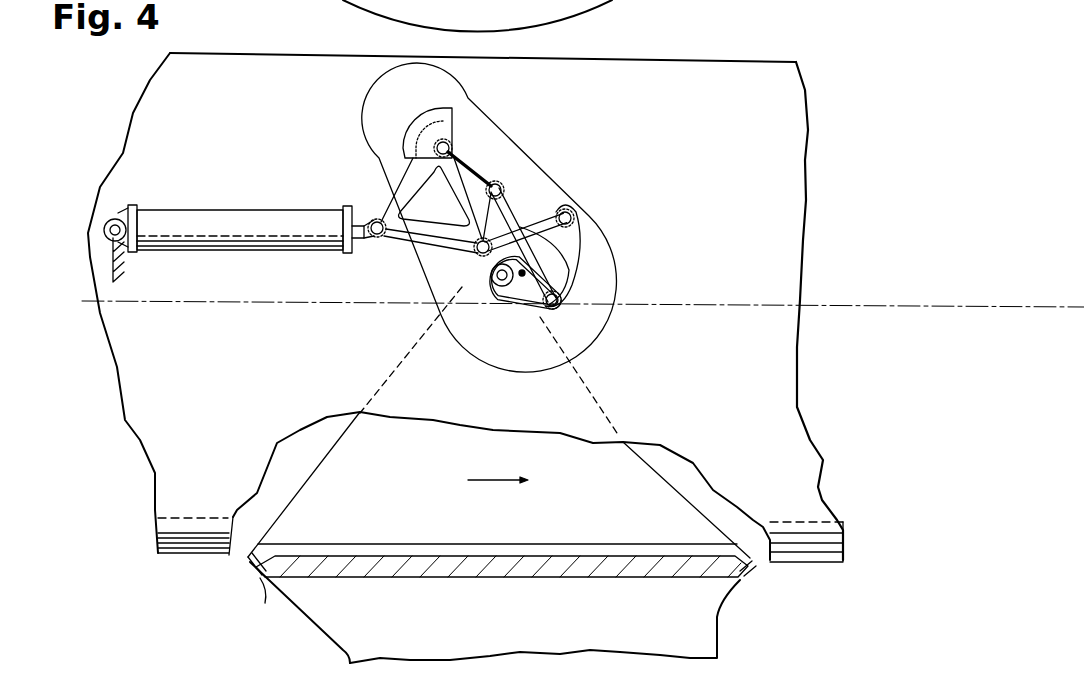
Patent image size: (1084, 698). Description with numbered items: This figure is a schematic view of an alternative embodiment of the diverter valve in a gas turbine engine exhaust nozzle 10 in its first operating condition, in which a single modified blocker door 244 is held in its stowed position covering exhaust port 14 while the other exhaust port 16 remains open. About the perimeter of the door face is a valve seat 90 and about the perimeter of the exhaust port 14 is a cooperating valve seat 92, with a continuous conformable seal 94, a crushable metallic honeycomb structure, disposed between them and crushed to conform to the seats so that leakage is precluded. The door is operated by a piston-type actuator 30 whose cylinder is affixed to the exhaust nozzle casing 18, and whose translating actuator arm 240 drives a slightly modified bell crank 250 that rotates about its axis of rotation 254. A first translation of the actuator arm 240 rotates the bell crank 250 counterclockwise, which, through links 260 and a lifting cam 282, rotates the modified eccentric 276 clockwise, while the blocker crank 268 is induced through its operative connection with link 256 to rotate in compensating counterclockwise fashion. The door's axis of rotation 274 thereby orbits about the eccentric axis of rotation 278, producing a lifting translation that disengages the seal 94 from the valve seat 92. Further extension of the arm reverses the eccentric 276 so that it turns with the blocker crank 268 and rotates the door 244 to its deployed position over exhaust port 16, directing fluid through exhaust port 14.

The gas turbine engine exhaust nozzle 10 is at (665, 49).
The exhaust port 16 is at (800, 351).
The actuator 30 is at (248, 198).
The axis of rotation 254 is at (452, 148).
The bell crank 250 is at (477, 175).
The links 260 is at (533, 229).
The lifting cam 282 is at (567, 240).
The eccentric 276 is at (557, 273).
The link 256 is at (565, 298).
The actuator arm 240 is at (361, 240).
The axis of rotation 274 is at (495, 277).
The eccentric axis of rotation 278 is at (522, 276).
The bell crank 268 is at (536, 300).
The valve seat 92 is at (242, 554).
The exhaust nozzle casing 18 is at (178, 559).
The conformable seal 94 is at (250, 568).
The valve seat 90 is at (261, 580).
The nozzle exhaust port 14 is at (297, 609).
The blocker door 244 is at (620, 582).